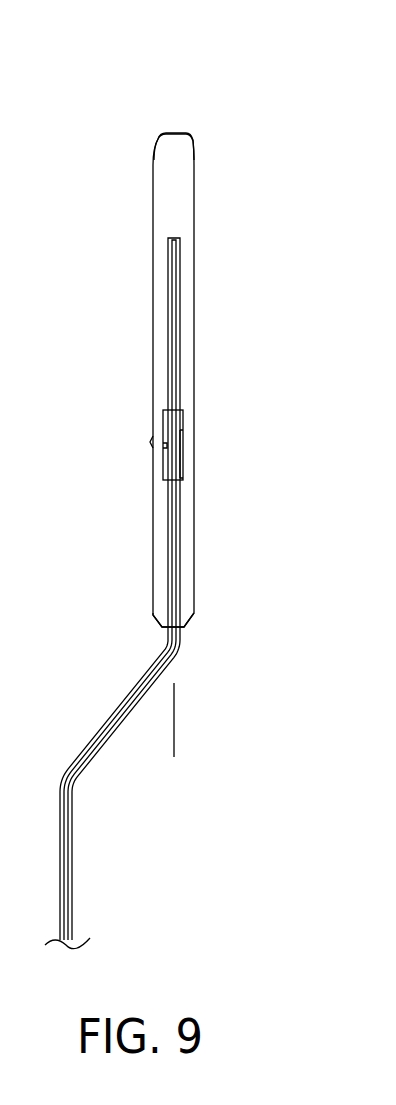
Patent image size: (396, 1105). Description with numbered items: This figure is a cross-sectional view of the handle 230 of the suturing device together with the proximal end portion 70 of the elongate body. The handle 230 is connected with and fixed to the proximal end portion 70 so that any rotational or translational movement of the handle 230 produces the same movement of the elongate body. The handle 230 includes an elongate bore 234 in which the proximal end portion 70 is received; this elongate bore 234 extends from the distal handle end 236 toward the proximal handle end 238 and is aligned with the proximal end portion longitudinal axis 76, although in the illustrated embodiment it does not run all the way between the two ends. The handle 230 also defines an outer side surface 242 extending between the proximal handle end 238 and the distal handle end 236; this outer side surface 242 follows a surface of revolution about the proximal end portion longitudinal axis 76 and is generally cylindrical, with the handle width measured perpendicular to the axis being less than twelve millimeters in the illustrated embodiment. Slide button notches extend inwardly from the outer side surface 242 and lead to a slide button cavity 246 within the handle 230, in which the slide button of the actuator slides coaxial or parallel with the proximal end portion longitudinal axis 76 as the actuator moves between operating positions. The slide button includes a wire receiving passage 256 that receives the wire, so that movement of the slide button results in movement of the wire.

The handle 230 is at (175, 216).
The proximal handle end 238 is at (168, 132).
The outer side surface 242 is at (194, 255).
The elongate bore 234 is at (177, 390).
The slide button cavity 246 is at (165, 462).
The wire receiving passage 256 is at (180, 430).
The proximal end portion 70 is at (182, 606).
The distal handle end 236 is at (182, 628).
The proximal end portion longitudinal axis 76 is at (175, 733).